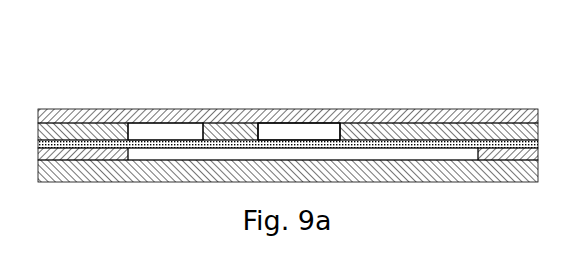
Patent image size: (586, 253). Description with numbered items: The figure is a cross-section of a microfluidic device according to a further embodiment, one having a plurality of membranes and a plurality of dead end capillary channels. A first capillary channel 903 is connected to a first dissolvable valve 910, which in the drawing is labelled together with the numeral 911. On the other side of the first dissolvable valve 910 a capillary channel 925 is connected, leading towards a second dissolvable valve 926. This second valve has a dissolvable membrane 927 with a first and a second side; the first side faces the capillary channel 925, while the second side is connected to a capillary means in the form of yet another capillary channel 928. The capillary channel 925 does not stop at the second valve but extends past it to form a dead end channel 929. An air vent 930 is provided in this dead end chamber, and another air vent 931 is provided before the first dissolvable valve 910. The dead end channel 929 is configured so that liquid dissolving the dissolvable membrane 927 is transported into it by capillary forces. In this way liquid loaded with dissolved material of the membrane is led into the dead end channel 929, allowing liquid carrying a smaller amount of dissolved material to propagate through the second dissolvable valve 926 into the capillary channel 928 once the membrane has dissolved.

The first capillary channel 903 is at (151, 133).
The first dissolvable valve 910 is at (177, 140).
The second electrode 911 is at (177, 140).
The capillary channel 925 is at (148, 153).
The second dissolvable valve 926 is at (283, 140).
The dissolvable membrane 927 is at (283, 140).
The capillary channel 928 is at (298, 138).
The dead end channel 929 is at (433, 152).
The air vent 930 is at (467, 163).
The air vent 931 is at (168, 120).